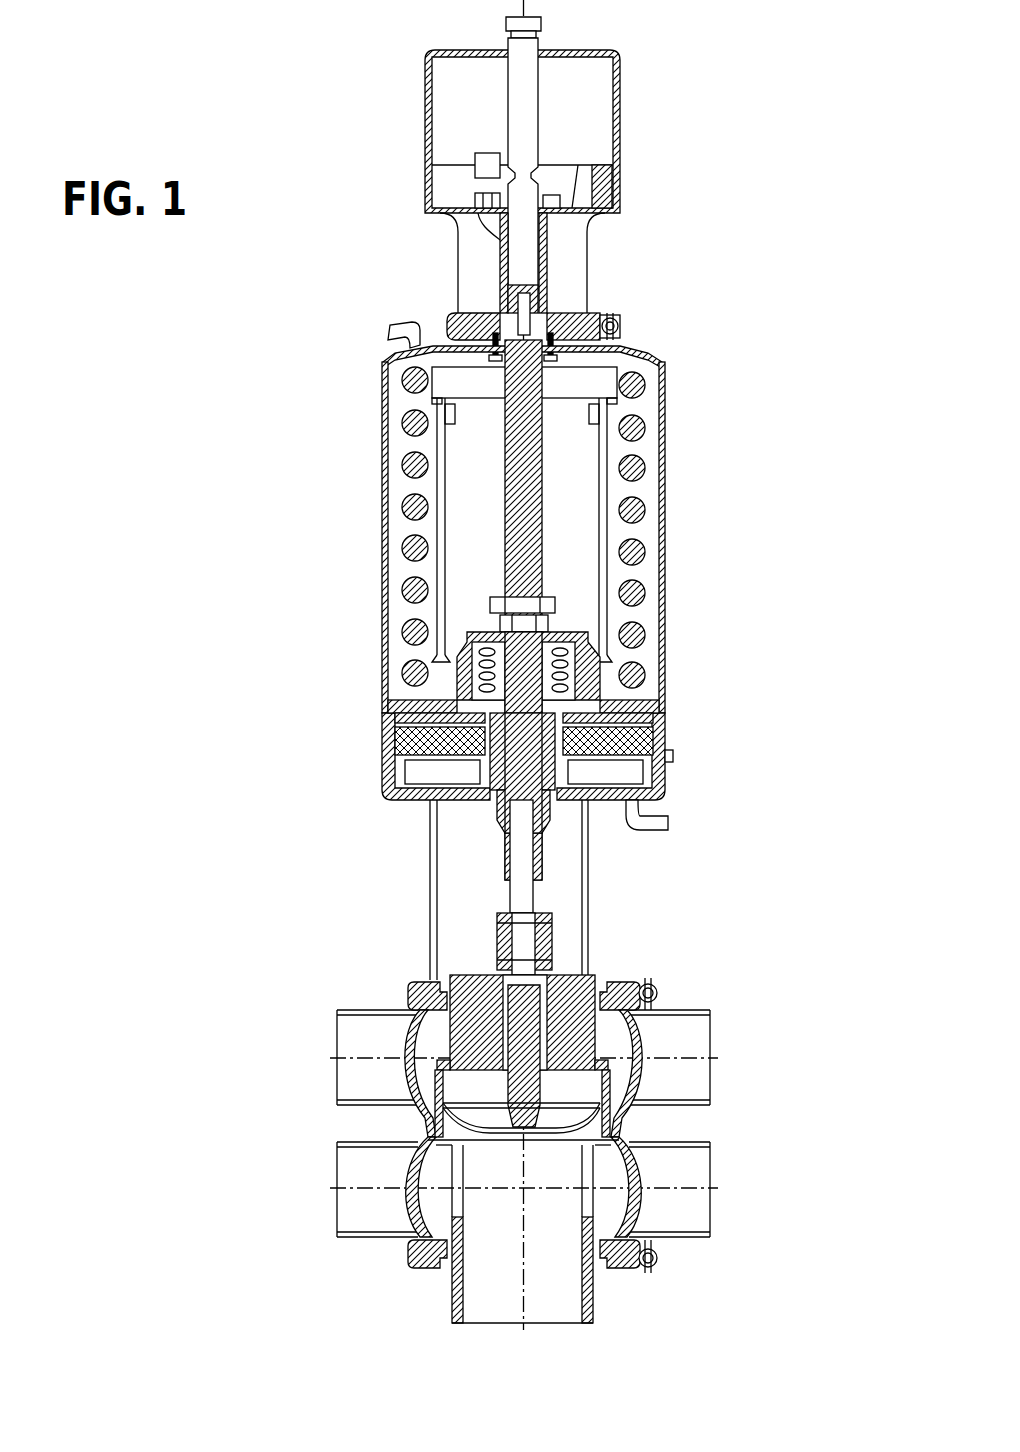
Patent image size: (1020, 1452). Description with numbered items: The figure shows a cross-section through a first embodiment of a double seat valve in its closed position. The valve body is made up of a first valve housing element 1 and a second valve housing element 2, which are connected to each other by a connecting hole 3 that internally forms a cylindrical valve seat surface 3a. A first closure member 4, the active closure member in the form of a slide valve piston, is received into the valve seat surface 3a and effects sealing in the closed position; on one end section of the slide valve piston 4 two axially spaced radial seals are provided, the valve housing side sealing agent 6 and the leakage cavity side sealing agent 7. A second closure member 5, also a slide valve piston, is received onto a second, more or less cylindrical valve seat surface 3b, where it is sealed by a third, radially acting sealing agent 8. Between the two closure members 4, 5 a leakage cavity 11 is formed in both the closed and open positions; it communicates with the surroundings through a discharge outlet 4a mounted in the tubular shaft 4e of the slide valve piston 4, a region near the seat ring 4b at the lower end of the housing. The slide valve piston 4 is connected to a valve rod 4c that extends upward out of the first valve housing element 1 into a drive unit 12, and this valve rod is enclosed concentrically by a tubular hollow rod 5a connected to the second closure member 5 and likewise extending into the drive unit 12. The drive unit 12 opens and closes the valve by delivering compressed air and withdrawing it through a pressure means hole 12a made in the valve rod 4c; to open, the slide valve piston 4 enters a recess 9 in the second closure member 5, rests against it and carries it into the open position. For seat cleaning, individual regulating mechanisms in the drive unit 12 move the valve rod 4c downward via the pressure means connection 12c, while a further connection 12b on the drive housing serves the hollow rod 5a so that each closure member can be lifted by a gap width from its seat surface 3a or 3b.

The first valve housing element 1 is at (678, 1047).
The second valve housing element 2 is at (676, 1182).
The connecting hole 3 is at (600, 1120).
The valve seat surface 3a is at (615, 1132).
The second valve seat surface 3b is at (600, 1106).
The first closure member 4 is at (428, 1112).
The discharge outlet 4a is at (480, 1153).
The valve seat ring 4b is at (440, 1125).
The valve rod 4c is at (553, 952).
The tubular shaft 4e is at (593, 1290).
The second closure member 5 is at (455, 1075).
The hollow rod 5a is at (540, 857).
The valve housing side sealing agent 6 is at (575, 1130).
The leakage cavity side sealing agent 7 is at (465, 1120).
The third sealing agent 8 is at (597, 1090).
The recess 9 is at (640, 1052).
The leakage cavity 11 is at (445, 1065).
The drive unit 12 is at (674, 480).
The pressure means hole 12a is at (538, 418).
The lower air port 12b is at (670, 820).
The pressure means connection 12c is at (388, 322).